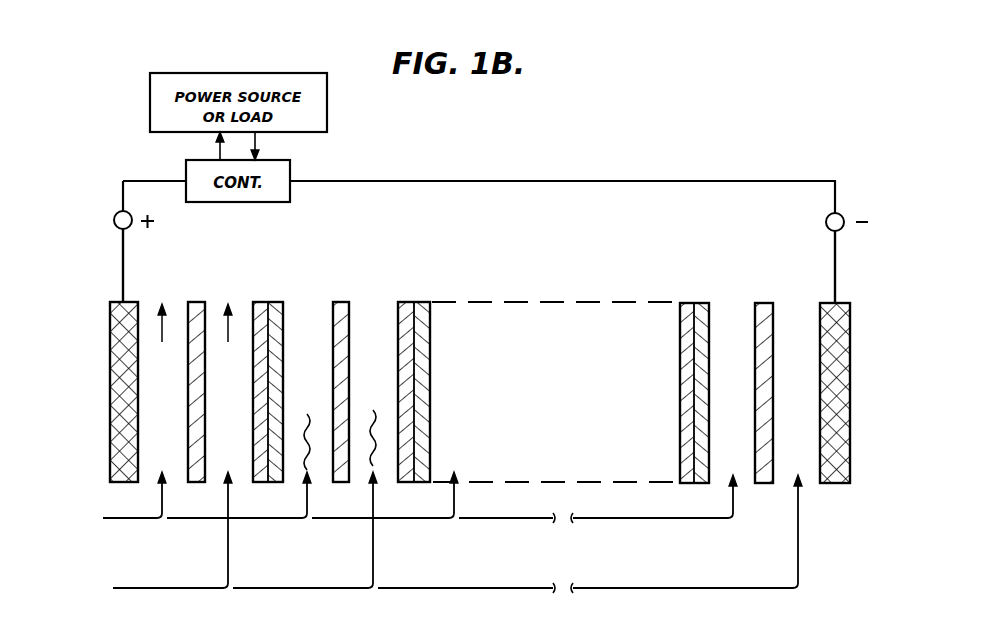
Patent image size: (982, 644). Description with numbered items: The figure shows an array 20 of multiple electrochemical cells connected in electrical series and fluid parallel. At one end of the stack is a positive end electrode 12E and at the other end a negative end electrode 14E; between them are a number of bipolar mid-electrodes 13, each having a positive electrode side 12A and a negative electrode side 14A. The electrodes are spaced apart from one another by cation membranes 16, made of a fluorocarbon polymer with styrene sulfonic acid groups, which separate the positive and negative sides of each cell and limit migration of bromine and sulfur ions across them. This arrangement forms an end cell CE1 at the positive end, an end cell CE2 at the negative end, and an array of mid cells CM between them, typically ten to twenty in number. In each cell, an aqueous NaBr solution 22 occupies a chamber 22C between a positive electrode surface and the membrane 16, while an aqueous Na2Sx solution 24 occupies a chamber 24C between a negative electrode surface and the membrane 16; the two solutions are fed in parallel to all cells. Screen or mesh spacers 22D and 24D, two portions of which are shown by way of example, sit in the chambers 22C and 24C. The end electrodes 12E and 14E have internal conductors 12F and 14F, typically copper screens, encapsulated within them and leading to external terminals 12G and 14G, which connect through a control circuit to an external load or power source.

The external terminal 12G is at (114, 219).
The internal conductor 12F is at (122, 265).
The positive end electrode 12E is at (110, 327).
The external terminal 14G is at (826, 222).
The internal conductor 14F is at (834, 258).
The negative end electrode 14E is at (820, 307).
The mid-electrode 13 is at (265, 302).
The negative electrode side 14A is at (253, 305).
The positive electrode side 12A is at (282, 305).
The cation membrane 16 is at (195, 302).
The array 20 is at (458, 248).
The aqueous NaBr solution 22 is at (400, 504).
The aqueous Na2Sx solution 24 is at (435, 541).
The chamber 22C is at (233, 349).
The chamber 24C is at (298, 349).
The screen or mesh spacer 22D is at (300, 438).
The screen or mesh spacer 24D is at (377, 435).
The end cell CE1 is at (158, 363).
The mid cell CM is at (392, 352).
The end cell CE2 is at (718, 413).